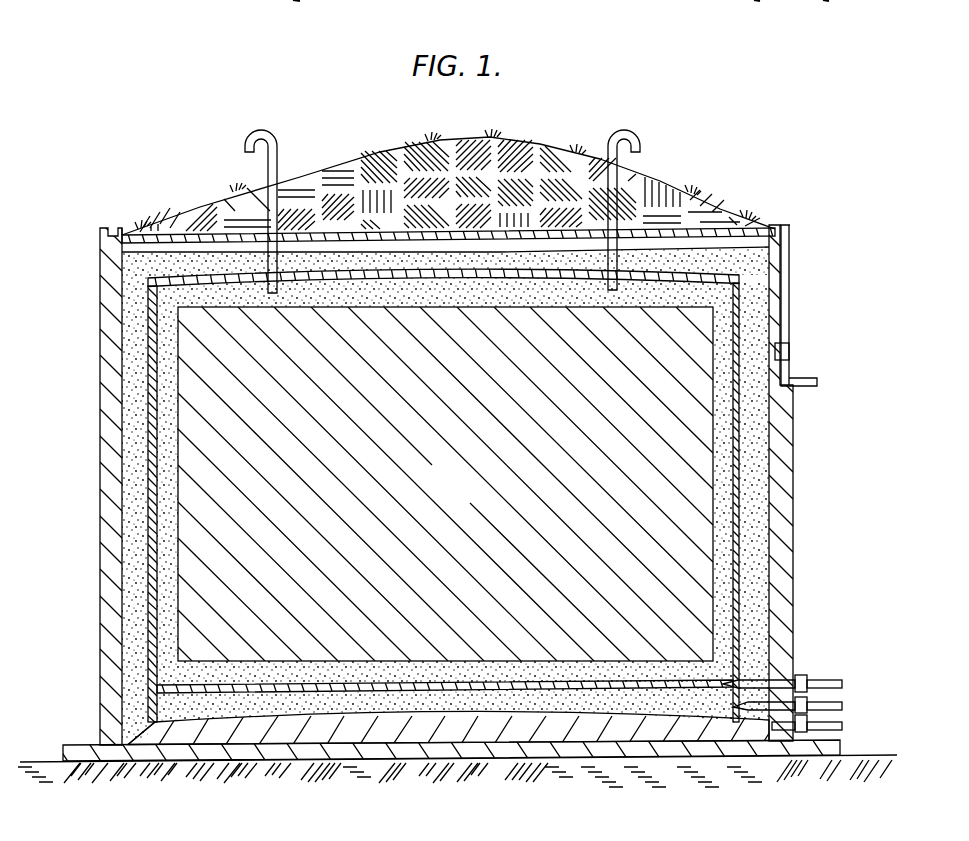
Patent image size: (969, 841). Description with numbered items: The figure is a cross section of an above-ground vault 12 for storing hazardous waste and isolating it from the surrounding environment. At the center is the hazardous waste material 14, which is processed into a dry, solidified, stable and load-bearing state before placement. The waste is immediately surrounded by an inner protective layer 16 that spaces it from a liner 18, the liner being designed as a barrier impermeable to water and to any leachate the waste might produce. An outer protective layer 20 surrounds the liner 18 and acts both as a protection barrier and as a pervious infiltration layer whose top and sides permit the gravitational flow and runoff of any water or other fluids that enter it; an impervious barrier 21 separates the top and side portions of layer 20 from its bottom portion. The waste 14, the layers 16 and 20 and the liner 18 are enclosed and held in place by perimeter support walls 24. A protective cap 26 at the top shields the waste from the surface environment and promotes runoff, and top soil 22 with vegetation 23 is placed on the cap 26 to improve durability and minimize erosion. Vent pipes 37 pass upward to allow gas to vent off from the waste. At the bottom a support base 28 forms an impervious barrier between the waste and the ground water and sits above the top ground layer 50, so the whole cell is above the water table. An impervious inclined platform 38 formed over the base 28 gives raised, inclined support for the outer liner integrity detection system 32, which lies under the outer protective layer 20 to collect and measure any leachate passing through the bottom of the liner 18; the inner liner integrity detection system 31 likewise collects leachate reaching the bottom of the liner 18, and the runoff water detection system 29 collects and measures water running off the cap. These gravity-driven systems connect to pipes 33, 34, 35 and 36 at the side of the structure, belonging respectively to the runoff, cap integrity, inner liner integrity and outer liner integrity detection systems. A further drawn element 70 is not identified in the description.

The vault 12 is at (597, 121).
The hazardous waste material 14 is at (458, 495).
The inner protective layer 16 is at (727, 458).
The liner 18 is at (739, 484).
The outer protective layer 20 is at (758, 552).
The barrier 21 is at (152, 726).
The top soil 22 is at (393, 141).
The vegetation 23 is at (488, 134).
The perimeter support walls 24 is at (783, 605).
The protective cap 26 is at (703, 188).
The support base 28 is at (812, 752).
The runoff water detection system 29 is at (782, 225).
The inner liner integrity detection system 31 is at (848, 684).
The outer liner integrity detection system 32 is at (637, 703).
The pipe 33 is at (812, 380).
The pipe 34 is at (840, 727).
The pipe 35 is at (760, 676).
The pipe 36 is at (832, 708).
The vent pipes 37 is at (278, 142).
The inclined platform 38 is at (405, 728).
The top ground layer 50 is at (50, 761).
The air space 70 is at (492, 245).